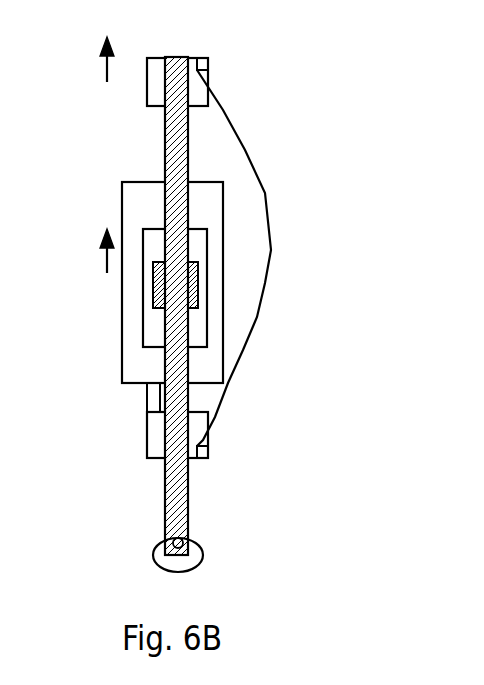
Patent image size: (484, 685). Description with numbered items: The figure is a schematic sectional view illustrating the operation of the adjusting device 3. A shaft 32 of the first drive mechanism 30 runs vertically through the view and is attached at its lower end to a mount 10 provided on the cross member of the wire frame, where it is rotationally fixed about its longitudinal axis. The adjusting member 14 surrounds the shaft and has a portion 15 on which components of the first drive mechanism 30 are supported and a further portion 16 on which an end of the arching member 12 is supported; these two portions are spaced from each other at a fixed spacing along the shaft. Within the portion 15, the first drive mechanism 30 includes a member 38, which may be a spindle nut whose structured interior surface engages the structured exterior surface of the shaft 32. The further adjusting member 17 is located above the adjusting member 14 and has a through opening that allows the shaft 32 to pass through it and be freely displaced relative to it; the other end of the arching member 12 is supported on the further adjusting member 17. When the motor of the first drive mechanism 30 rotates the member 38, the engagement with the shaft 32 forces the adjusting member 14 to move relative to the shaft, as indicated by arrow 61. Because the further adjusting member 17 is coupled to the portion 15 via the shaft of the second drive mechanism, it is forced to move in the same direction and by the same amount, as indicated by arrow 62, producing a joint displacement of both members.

The adjusting device 3 is at (242, 311).
The mount 10 is at (200, 563).
The arching member 12 is at (271, 250).
The adjusting member 14 is at (167, 253).
The portion 15 is at (122, 372).
The further portion 16 is at (208, 452).
The further adjusting member 17 is at (197, 58).
The first drive mechanism 30 is at (208, 245).
The shaft 32 is at (191, 148).
The member 38 is at (200, 292).
The arrow 61 is at (106, 262).
The arrow 62 is at (106, 70).